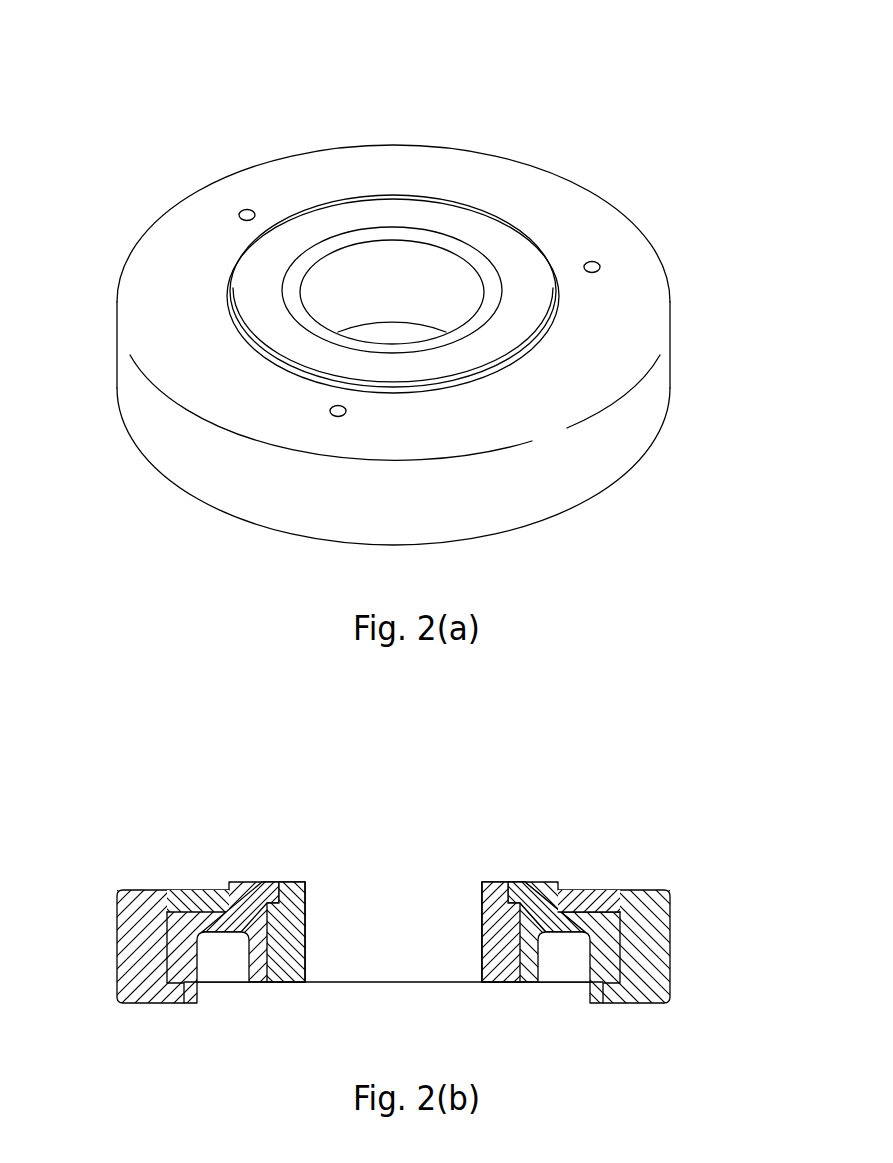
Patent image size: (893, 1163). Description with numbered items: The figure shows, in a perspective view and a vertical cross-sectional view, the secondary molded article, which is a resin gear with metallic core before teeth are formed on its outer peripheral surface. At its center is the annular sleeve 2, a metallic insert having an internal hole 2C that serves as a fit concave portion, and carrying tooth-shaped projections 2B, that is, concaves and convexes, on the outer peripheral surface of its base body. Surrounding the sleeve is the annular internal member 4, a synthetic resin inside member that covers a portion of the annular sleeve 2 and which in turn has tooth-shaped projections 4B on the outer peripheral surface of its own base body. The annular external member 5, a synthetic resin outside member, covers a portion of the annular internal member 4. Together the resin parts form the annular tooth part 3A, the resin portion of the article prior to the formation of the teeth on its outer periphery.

In FIG. 2A, the annular sleeve 2 is at (355, 240).
In FIG. 2B, the annular sleeve 2 is at (490, 882).
In FIG. 2B, the tooth-shaped projections 2B is at (540, 940).
In FIG. 2A, the internal hole 2C is at (398, 338).
In FIG. 2B, the internal hole 2C is at (312, 922).
In FIG. 2A, the annular tooth part 3A is at (550, 60).
In FIG. 2B, the annular tooth part 3A is at (645, 786).
In FIG. 2A, the annular internal member 4 is at (460, 225).
In FIG. 2B, the annular internal member 4 is at (542, 878).
In FIG. 2B, the tooth-shaped projections 4B is at (623, 943).
In FIG. 2A, the annular external member 5 is at (507, 207).
In FIG. 2B, the annular external member 5 is at (620, 882).